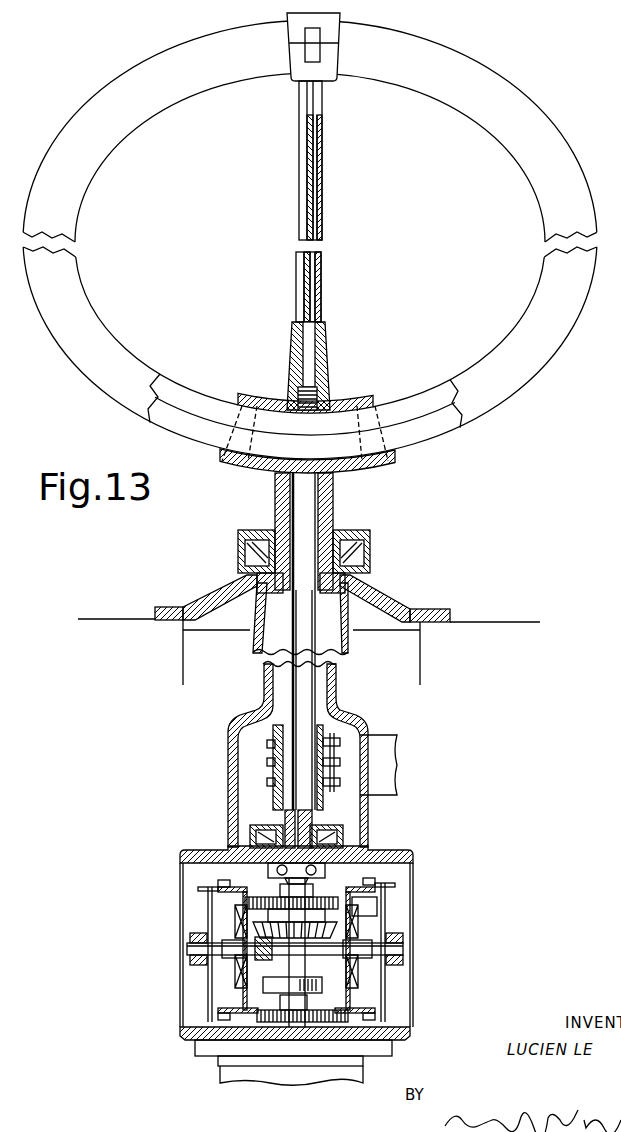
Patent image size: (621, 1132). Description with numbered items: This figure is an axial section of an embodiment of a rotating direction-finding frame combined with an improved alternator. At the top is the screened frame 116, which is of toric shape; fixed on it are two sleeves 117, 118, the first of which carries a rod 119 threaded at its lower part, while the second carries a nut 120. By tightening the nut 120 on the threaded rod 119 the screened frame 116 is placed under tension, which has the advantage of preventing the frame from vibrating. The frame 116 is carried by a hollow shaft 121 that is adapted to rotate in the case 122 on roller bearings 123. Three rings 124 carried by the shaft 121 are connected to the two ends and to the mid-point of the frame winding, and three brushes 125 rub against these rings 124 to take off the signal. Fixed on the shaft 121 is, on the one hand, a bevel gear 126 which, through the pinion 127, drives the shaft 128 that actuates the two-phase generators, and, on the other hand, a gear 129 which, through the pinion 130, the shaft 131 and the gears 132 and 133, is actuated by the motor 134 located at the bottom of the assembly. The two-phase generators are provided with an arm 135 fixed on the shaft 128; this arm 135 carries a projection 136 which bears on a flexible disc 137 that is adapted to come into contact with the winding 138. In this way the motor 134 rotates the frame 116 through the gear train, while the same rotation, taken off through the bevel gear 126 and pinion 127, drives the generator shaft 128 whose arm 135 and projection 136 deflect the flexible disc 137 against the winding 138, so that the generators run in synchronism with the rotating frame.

The screened frame 116 is at (503, 153).
The sleeve 117 is at (325, 72).
The sleeve 118 is at (348, 404).
The rod 119 is at (320, 175).
The nut 120 is at (290, 372).
The hollow shaft 121 is at (317, 615).
The case 122 is at (337, 670).
The roller bearings 123 is at (250, 557).
The rings 124 is at (267, 782).
The brushes 125 is at (340, 782).
The bevel gear 126 is at (330, 934).
The pinion 127 is at (258, 962).
The shaft 128 is at (192, 947).
The gear 129 is at (250, 904).
The pinion 130 is at (363, 908).
The shaft 131 is at (296, 965).
The gear 132 is at (383, 1022).
The gear 133 is at (318, 1025).
The motor 134 is at (228, 1080).
The arm 135 is at (218, 912).
The projection 136 is at (203, 884).
The flexible disc 137 is at (393, 888).
The winding 138 is at (220, 884).